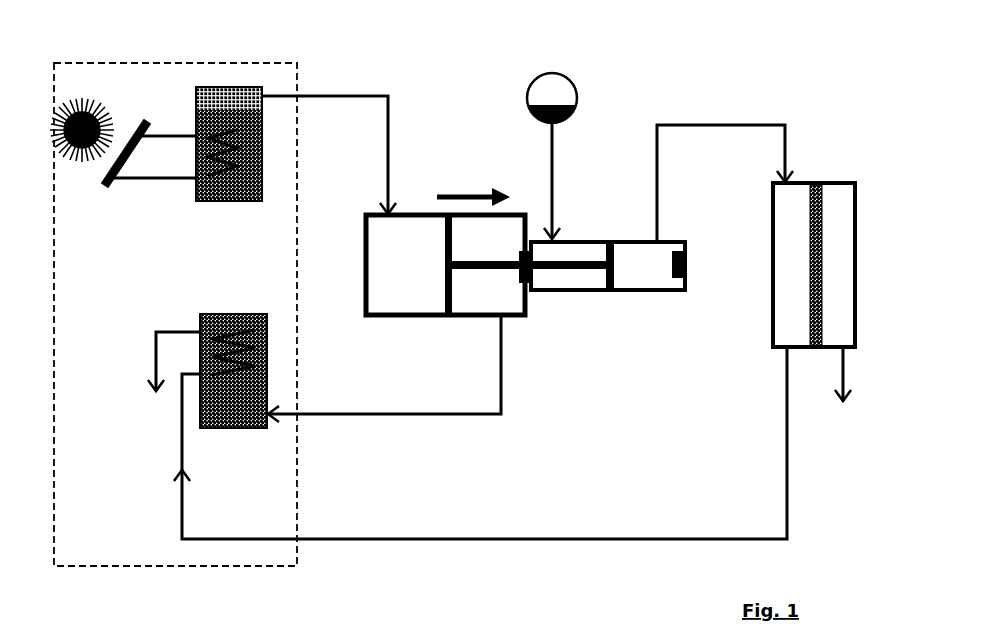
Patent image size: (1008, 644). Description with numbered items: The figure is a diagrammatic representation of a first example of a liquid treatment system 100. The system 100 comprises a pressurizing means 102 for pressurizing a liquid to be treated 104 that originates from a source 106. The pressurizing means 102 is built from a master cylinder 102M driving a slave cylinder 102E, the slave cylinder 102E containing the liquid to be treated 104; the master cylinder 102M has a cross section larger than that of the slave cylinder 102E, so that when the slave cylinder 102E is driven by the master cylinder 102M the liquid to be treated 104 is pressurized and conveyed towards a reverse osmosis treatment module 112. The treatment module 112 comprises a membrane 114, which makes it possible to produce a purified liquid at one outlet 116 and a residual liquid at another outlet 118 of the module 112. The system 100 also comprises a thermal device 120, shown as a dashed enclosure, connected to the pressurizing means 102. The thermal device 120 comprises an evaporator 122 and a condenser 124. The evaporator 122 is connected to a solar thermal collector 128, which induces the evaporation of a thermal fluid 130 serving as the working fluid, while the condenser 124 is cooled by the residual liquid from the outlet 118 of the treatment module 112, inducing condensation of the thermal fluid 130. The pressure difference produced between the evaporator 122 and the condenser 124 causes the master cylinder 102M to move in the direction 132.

The system 100 is at (157, 393).
The pressurizing means 102 is at (468, 340).
The master cylinder 102M is at (380, 318).
The slave cylinder 102E is at (647, 240).
The liquid to be treated 104 is at (577, 100).
The source 106 is at (530, 80).
The reverse osmosis treatment module 112 is at (772, 273).
The membrane 114 is at (820, 180).
The outlet 116 is at (840, 428).
The outlet 118 is at (782, 353).
The thermal device 120 is at (297, 566).
The evaporator 122 is at (222, 122).
The condenser 124 is at (225, 330).
The solar thermal collector 128 is at (135, 122).
The thermal fluid 130 is at (197, 198).
The direction 132 is at (467, 188).